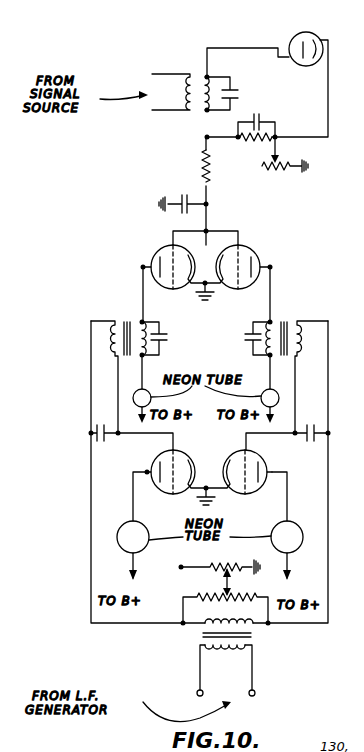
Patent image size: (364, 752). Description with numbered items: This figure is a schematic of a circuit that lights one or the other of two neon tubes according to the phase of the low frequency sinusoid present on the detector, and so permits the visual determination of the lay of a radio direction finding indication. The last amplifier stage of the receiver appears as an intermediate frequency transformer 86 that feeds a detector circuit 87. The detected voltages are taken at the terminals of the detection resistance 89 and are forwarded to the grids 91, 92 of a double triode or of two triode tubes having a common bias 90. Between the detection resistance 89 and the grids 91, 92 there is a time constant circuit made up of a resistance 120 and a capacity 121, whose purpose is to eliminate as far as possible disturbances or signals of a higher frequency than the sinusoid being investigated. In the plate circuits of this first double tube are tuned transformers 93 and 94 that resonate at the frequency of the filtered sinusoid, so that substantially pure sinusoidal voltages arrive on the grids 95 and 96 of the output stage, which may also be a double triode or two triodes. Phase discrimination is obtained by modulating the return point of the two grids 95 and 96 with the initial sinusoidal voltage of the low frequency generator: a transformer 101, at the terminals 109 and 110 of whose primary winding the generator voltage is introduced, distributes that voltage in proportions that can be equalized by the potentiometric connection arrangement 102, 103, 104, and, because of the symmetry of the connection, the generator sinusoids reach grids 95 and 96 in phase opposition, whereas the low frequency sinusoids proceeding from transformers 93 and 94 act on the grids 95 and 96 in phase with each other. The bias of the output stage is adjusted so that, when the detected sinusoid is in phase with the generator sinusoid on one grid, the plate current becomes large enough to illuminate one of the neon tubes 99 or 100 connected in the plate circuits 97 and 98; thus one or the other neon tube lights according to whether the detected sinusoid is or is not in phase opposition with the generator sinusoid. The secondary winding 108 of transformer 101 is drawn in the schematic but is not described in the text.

The intermediate frequency transformer 86 is at (193, 73).
The detector circuit 87 is at (300, 53).
The detection resistance 89 is at (316, 46).
The common bias 90 is at (280, 165).
The resistance 120 is at (210, 179).
The capacity 121 is at (189, 192).
The grid 91 is at (172, 247).
The grid 92 is at (240, 247).
The tuned transformer 93 is at (128, 323).
The tuned transformer 94 is at (284, 323).
The grid 95 is at (174, 445).
The grid 96 is at (247, 445).
The plate circuit 97 is at (163, 487).
The plate circuit 98 is at (259, 487).
The neon tube 99 is at (146, 527).
The neon tube 100 is at (272, 532).
The transformer 101 is at (200, 631).
The potentiometric connection arrangement 102 is at (225, 608).
The potentiometric connection arrangement 103 is at (230, 582).
The potentiometric connection arrangement 104 is at (240, 556).
The transformer secondary 108 is at (242, 650).
The terminal 109 is at (196, 703).
The terminal 110 is at (252, 703).